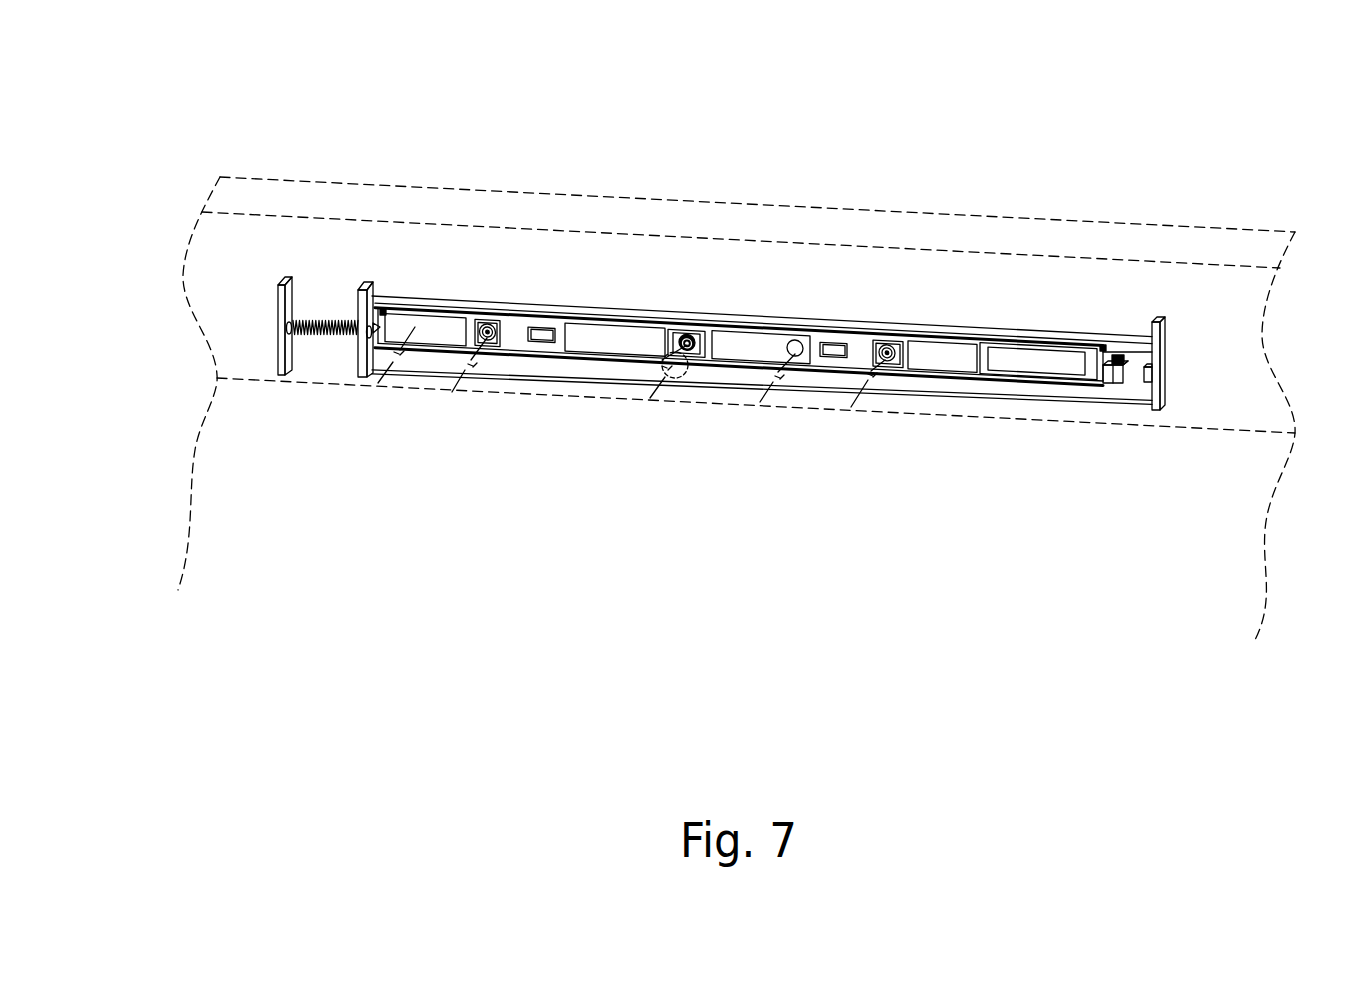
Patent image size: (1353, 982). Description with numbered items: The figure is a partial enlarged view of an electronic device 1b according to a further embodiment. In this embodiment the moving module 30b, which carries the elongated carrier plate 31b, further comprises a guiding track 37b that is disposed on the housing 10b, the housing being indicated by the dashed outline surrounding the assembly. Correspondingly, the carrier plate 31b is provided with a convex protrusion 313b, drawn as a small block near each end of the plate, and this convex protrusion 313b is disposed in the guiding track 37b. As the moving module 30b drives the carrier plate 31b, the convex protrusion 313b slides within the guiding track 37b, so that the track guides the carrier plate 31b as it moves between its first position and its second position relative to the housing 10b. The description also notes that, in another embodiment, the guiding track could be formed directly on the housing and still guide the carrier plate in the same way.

The electronic device 1b is at (190, 112).
The housing 10b is at (232, 197).
The moving module 30b is at (330, 272).
The carrier plate 31b is at (1052, 348).
The convex protrusion 313b is at (384, 310).
The guiding track 37b is at (1145, 352).